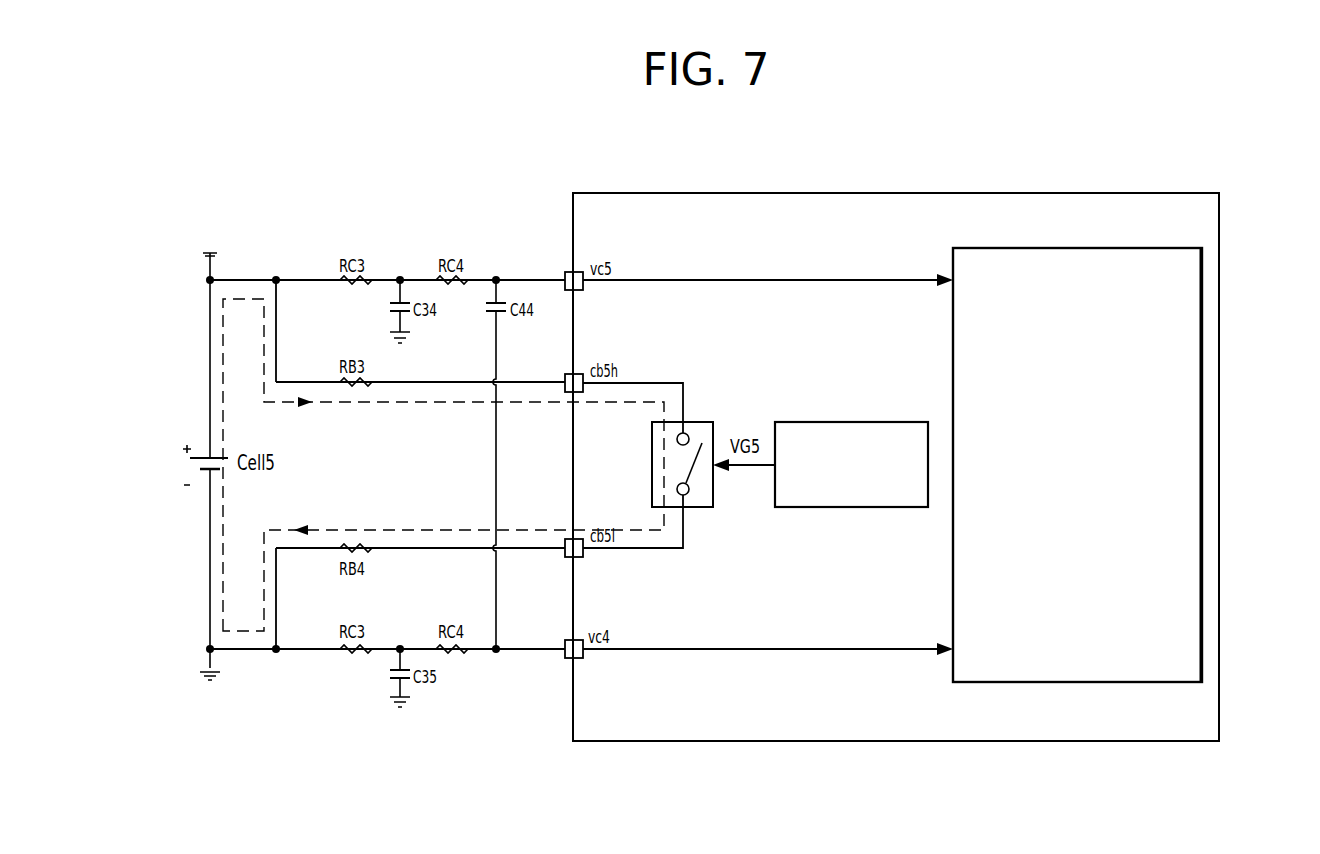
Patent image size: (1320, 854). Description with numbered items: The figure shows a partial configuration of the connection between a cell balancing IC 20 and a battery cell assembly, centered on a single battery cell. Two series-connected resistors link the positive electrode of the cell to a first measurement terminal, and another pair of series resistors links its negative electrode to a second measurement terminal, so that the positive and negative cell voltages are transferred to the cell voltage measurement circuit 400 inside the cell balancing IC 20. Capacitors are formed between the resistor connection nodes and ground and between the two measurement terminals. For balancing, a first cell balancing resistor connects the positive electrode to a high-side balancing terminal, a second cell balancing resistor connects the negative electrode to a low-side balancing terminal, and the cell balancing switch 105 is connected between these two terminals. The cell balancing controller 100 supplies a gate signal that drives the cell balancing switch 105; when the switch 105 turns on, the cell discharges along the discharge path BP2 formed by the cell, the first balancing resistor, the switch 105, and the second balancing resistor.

The battery management device 20 is at (829, 193).
The cell voltage measurement circuit 400 is at (1008, 248).
The cell balancing controller 100 is at (853, 421).
The cell balancing switch 105 is at (705, 421).
The discharge path BP2 is at (347, 404).